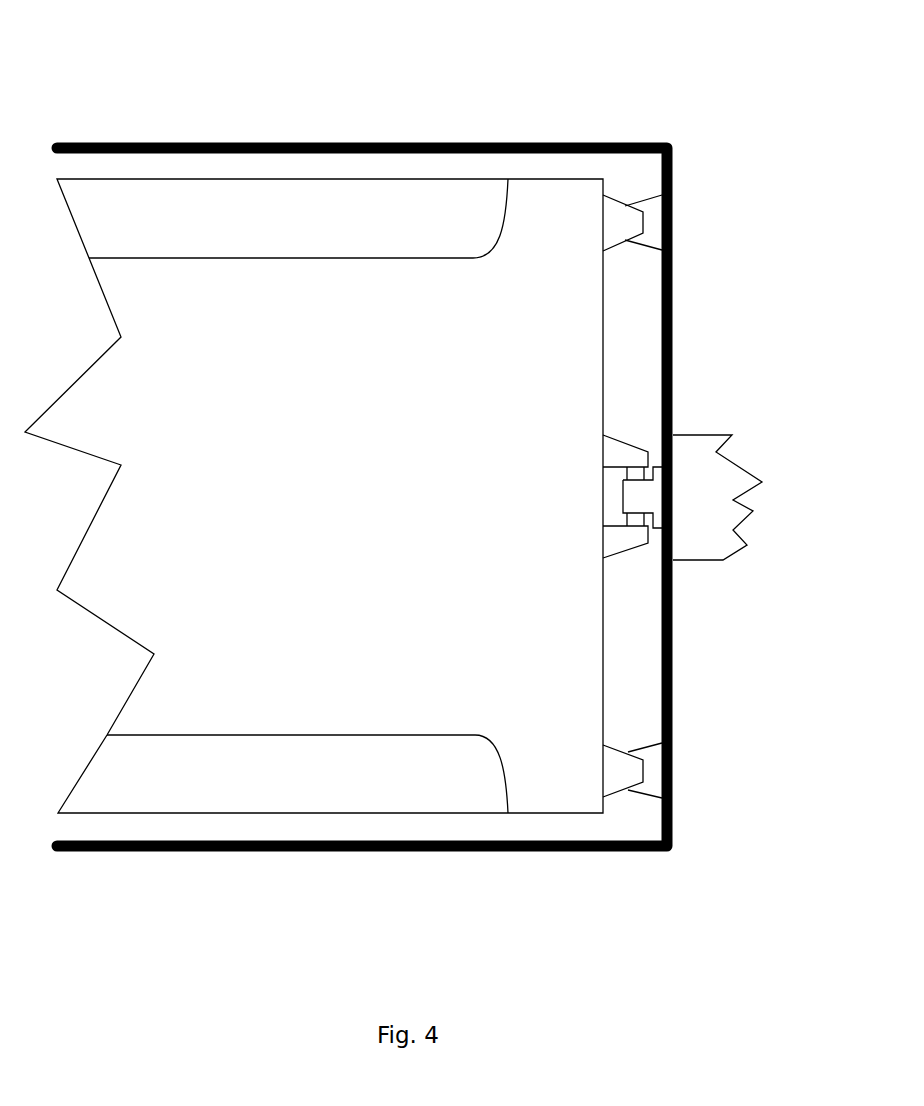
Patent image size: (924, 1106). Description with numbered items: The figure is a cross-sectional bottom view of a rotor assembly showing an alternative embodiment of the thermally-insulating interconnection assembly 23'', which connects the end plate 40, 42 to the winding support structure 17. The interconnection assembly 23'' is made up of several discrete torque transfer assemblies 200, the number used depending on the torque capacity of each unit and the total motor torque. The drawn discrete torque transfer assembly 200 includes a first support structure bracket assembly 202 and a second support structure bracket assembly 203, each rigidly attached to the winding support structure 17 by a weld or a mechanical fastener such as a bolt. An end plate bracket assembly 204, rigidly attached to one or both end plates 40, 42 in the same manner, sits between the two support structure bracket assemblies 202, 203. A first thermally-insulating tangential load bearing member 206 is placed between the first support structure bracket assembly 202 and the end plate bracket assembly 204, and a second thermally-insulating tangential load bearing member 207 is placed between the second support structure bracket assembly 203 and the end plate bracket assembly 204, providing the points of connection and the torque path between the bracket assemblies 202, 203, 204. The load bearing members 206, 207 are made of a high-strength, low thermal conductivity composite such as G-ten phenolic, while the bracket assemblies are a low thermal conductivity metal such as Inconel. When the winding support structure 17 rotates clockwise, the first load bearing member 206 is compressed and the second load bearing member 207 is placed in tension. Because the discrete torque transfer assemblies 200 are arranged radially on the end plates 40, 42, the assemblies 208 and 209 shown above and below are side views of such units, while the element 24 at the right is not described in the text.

The thermally-insulating interconnection assembly 23'' is at (343, 431).
The winding support structure 17 is at (603, 353).
The end plate 40 is at (581, 287).
The end plate 42 is at (662, 305).
The discrete torque transfer assembly (side view) 209 is at (625, 228).
The discrete torque transfer assembly (side view) 208 is at (622, 767).
The second support structure bracket assembly 203 is at (618, 450).
The second thermally-insulating tangential load bearing member 207 is at (627, 470).
The end plate bracket assembly 204 is at (630, 497).
The first thermally-insulating tangential load bearing member 206 is at (623, 522).
The first support structure bracket assembly 202 is at (620, 545).
The discrete torque transfer assembly 200 is at (623, 563).
The mounting bracket 24 is at (695, 537).